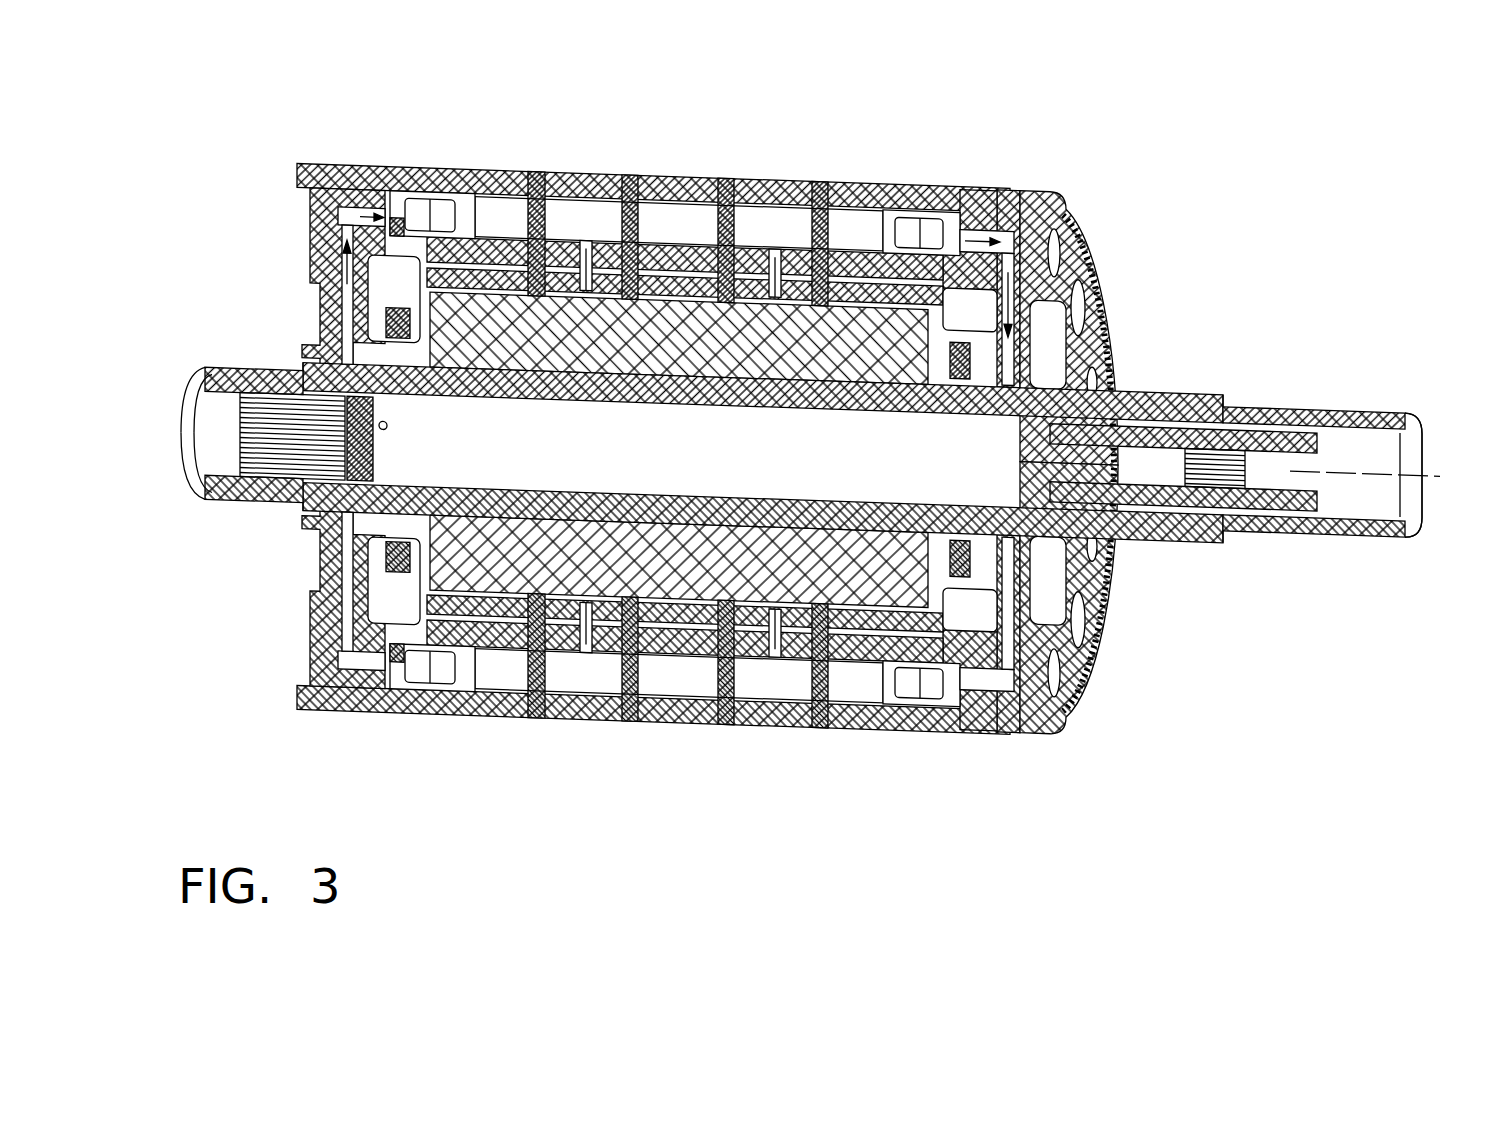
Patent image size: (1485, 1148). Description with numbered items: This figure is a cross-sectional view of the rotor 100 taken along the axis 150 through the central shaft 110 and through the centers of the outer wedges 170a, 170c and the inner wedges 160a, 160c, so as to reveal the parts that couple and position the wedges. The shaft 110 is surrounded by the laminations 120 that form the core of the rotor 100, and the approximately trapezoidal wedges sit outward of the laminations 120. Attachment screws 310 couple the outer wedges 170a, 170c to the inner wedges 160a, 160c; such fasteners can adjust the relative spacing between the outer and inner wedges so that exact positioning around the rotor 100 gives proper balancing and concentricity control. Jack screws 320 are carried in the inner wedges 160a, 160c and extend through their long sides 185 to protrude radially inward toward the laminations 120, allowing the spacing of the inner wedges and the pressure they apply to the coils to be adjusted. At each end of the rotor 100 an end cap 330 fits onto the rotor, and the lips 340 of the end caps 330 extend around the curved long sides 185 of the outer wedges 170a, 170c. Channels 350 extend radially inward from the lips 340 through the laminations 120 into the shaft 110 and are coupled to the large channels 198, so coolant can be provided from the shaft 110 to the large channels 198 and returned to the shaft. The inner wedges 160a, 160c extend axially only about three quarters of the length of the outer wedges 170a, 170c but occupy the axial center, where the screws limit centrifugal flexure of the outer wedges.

The rotor 100 is at (1218, 133).
The central shaft 110 is at (260, 386).
The laminations 120 is at (515, 575).
The axis 150 is at (1365, 457).
The inner wedge 160a is at (690, 294).
The inner wedge 160c is at (790, 620).
The outer wedge 170a is at (915, 191).
The outer wedge 170c is at (897, 717).
The long side 185 is at (468, 180).
The large channels 198 is at (860, 223).
The attachment screws 310 is at (636, 183).
The jack screws 320 is at (583, 298).
The end caps 330 is at (312, 240).
The lips 340 is at (300, 187).
The channels 350 is at (350, 339).